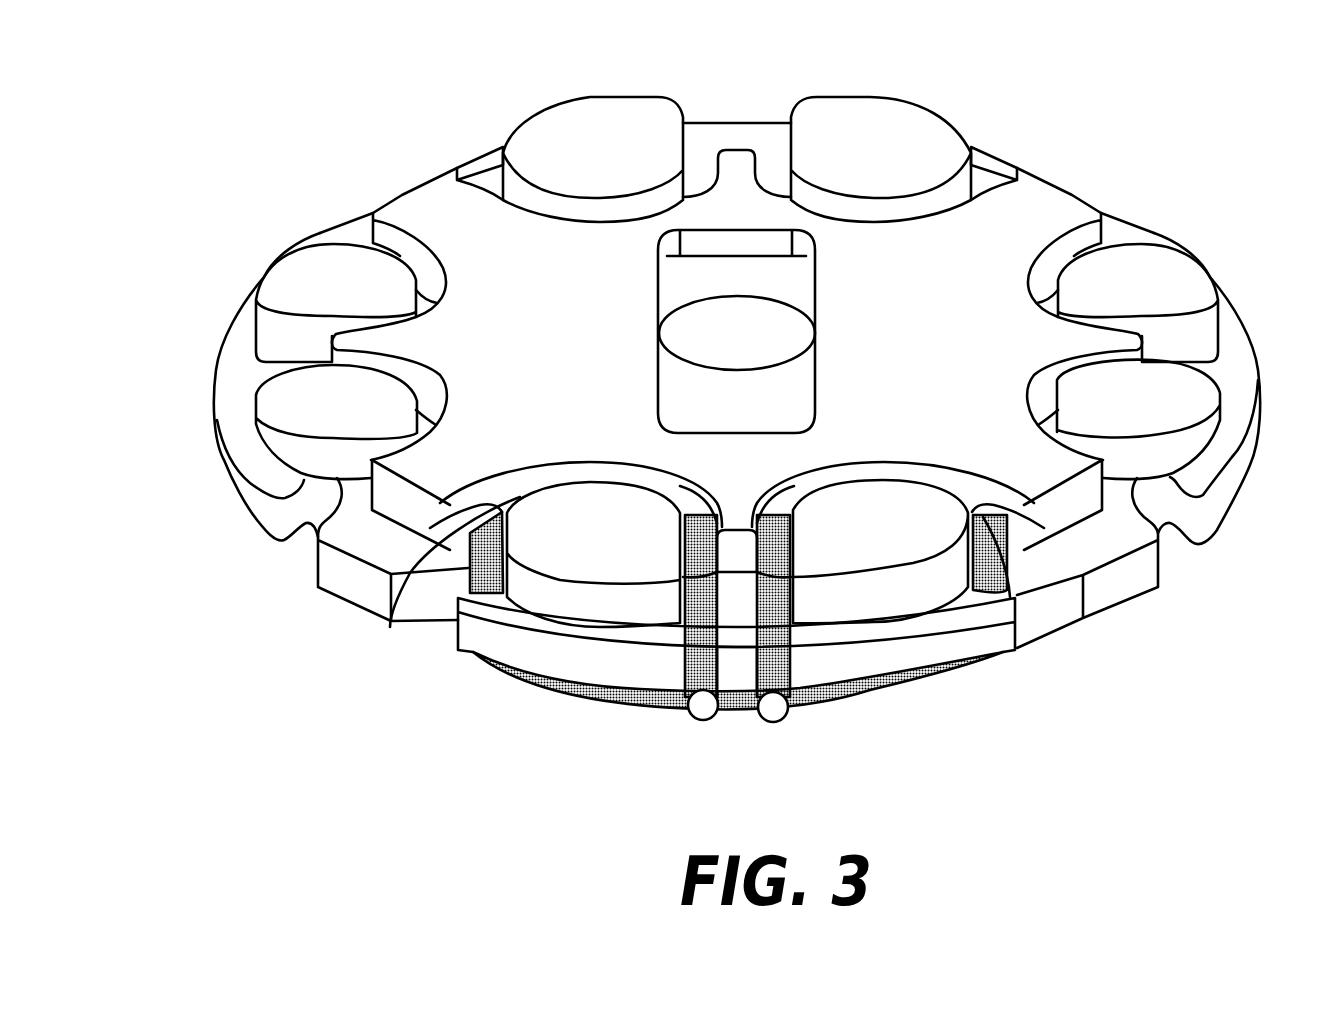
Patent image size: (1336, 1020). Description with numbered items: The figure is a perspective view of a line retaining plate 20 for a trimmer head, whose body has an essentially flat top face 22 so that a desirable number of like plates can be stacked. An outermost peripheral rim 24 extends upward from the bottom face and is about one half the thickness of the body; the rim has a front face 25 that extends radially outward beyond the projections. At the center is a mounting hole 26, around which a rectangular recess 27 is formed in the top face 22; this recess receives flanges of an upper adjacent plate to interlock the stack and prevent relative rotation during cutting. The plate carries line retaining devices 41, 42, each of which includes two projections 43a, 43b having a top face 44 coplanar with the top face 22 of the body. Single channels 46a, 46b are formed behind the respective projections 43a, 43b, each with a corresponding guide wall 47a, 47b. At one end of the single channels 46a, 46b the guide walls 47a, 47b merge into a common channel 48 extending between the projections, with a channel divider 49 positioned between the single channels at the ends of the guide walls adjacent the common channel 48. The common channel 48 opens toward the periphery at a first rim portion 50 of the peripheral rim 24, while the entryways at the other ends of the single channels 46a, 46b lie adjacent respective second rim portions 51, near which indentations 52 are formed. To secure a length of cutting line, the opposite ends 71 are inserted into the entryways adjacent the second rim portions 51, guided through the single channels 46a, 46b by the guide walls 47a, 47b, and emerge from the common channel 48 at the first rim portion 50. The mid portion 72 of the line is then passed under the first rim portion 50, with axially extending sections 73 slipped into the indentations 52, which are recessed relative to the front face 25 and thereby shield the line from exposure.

The plate 20 is at (1058, 170).
The top face 22 is at (915, 320).
The peripheral rim 24 is at (245, 345).
The front face 25 is at (990, 637).
The center mounting hole 26 is at (680, 340).
The rectangular recess 27 is at (680, 282).
The line retaining device 41 is at (723, 210).
The line retaining device 42 is at (441, 345).
The projection 43a is at (322, 262).
The projection 43b is at (577, 138).
The top face 44 is at (589, 545).
The single channel 46a is at (480, 507).
The single channel 46b is at (993, 517).
The guide wall 47a is at (650, 476).
The guide wall 47b is at (822, 480).
The common channel 48 is at (738, 630).
The channel divider 49 is at (740, 563).
The first rim portion 50 is at (740, 690).
The second rim portion 51 is at (352, 590).
The indentation 52 is at (458, 598).
The end of the cutting line 71 is at (702, 722).
The mid portion 72 is at (628, 692).
The axially extending section 73 is at (468, 577).